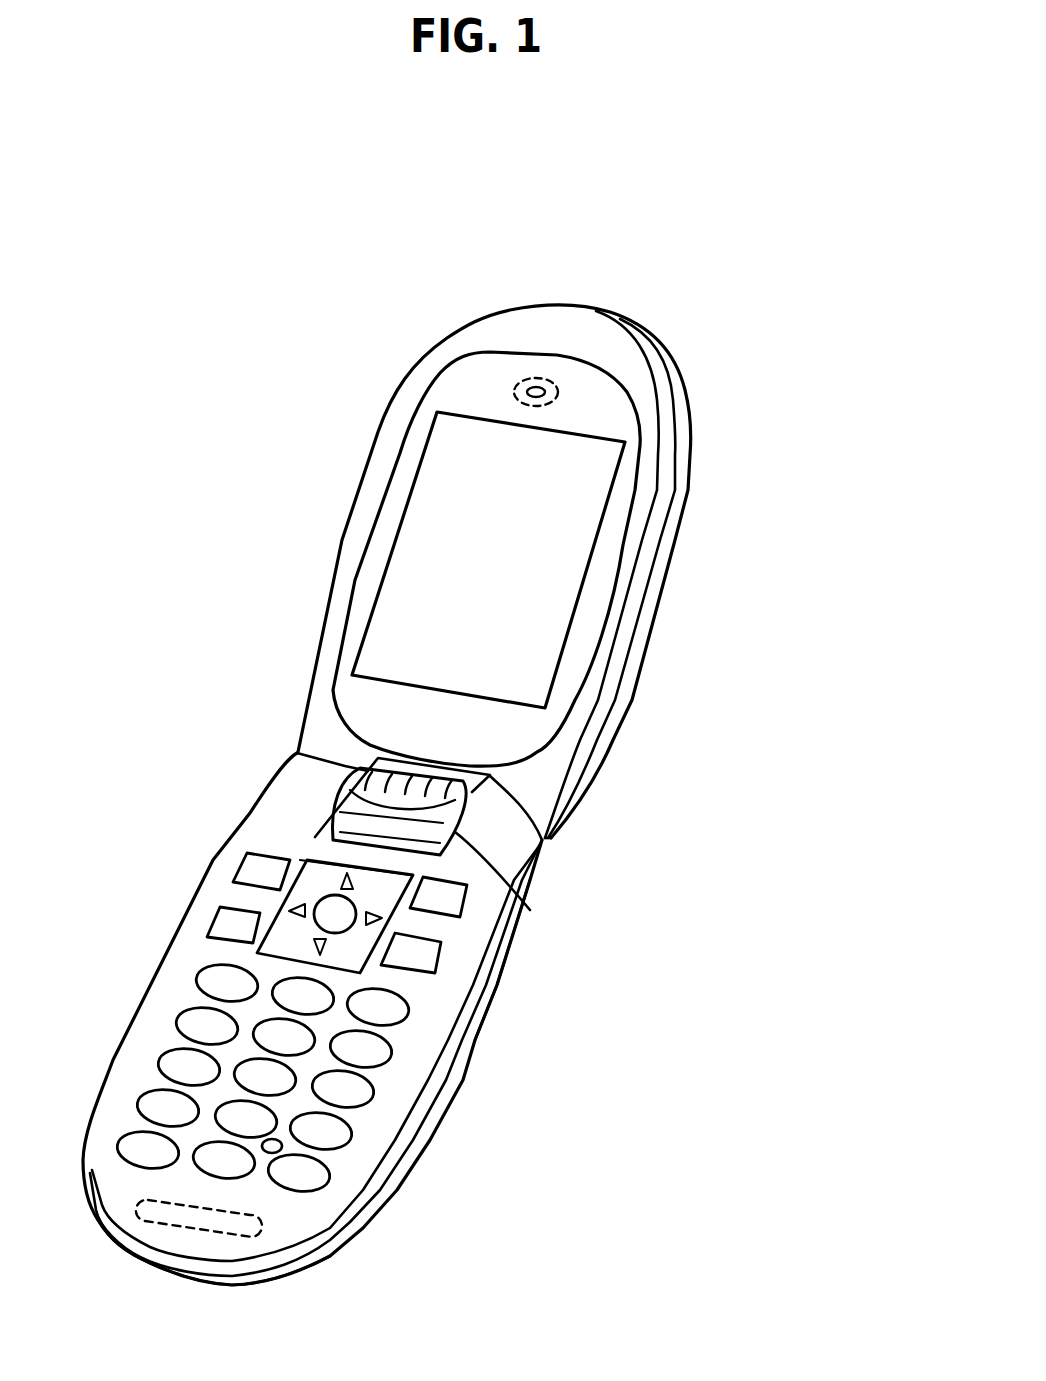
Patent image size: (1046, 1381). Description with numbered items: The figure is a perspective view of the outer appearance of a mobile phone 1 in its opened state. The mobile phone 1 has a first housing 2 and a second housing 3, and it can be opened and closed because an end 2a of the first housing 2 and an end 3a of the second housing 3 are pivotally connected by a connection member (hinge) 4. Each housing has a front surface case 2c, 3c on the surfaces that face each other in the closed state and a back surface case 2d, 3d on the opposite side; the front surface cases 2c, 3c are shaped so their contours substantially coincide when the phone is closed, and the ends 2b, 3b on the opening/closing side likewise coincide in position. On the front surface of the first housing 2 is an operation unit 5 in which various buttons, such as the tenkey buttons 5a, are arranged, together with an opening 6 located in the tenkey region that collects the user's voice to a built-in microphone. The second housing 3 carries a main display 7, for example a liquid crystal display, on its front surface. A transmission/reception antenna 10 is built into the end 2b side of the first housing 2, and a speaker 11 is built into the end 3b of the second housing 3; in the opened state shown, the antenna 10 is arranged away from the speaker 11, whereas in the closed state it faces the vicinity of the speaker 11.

The mobile phone 1 is at (868, 306).
The first housing 2 is at (473, 1040).
The end of the first housing 2a is at (497, 827).
The end of the first housing 2b is at (193, 1242).
The front surface case 2c is at (497, 987).
The back surface case 2d is at (497, 985).
The second housing 3 is at (633, 657).
The end of the second housing 3a is at (540, 780).
The end of the second housing 3b is at (556, 330).
The front surface case 3c is at (650, 553).
The back surface case 3d is at (657, 593).
The connection member (hinge) 4 is at (497, 938).
The operation unit 5 is at (418, 1038).
The tenkey buttons 5a is at (362, 1093).
The opening 6 is at (283, 1145).
The main display (first display) 7 is at (580, 472).
The transmission/reception antenna 10 is at (262, 1227).
The speaker 11 is at (560, 388).